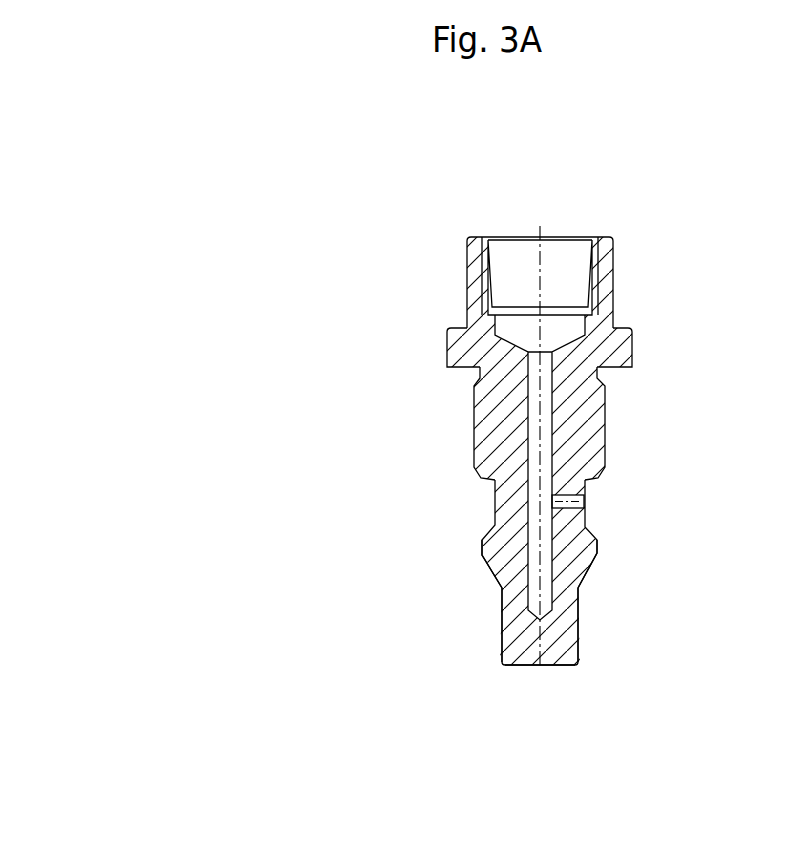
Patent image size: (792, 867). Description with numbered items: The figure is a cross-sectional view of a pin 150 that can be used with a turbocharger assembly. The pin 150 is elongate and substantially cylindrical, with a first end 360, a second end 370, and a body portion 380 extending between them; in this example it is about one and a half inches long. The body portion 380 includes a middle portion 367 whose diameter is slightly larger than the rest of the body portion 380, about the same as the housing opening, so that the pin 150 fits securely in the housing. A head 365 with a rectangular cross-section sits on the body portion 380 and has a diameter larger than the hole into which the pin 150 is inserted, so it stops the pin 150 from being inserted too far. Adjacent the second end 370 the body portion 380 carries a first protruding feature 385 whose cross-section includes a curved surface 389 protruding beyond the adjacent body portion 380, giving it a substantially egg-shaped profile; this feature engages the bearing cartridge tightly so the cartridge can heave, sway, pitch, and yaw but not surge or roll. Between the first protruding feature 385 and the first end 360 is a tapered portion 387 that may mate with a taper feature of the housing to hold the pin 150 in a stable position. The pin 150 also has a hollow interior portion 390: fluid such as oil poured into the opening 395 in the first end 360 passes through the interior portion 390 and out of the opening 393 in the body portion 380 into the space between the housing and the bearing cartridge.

The pin 150 is at (217, 263).
The first end 360 is at (467, 272).
The head 365 is at (628, 348).
The middle portion 367 is at (473, 430).
The second end 370 is at (560, 665).
The body portion 380 is at (660, 438).
The first protruding feature 385 is at (605, 639).
The tapered portion 387 is at (610, 563).
The curved surface 389 is at (485, 650).
The hollow interior portion 390 is at (545, 398).
The opening 393 is at (598, 504).
The opening 395 is at (560, 229).